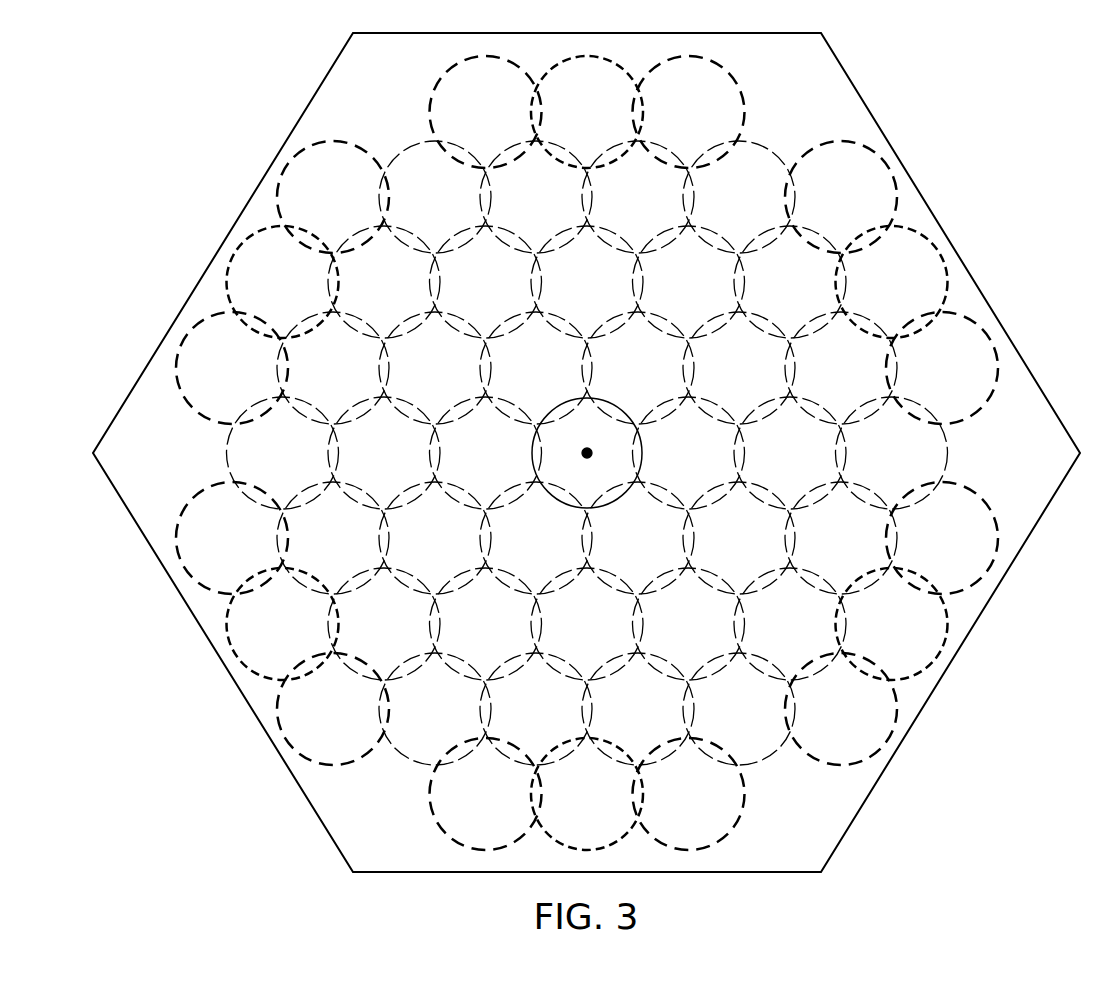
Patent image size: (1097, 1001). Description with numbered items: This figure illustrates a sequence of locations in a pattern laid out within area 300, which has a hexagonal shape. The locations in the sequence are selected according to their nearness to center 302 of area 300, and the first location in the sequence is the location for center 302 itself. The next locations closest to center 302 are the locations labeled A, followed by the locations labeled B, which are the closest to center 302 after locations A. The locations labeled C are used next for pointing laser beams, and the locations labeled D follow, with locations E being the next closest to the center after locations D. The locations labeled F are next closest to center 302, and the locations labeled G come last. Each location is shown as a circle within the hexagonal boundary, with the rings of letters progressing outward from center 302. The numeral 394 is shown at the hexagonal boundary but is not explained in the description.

The area 300 is at (222, 64).
The center 302 is at (587, 445).
The hexagonal coverage region 394 is at (116, 614).